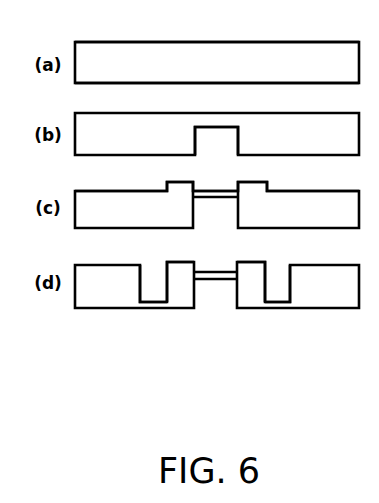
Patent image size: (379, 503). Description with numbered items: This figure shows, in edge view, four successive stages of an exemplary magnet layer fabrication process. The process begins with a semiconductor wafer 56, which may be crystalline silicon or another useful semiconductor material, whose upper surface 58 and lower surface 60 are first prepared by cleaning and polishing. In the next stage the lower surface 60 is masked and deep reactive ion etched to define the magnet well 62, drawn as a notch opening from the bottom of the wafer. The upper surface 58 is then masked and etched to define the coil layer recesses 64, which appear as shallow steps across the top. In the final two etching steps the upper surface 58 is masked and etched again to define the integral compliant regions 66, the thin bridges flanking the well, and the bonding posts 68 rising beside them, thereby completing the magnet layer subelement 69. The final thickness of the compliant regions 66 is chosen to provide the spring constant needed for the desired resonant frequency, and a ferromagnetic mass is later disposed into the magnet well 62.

The semiconductor wafer 56 is at (103, 52).
The upper surface 58 is at (209, 42).
The lower surface 60 is at (215, 82).
The magnet well 62 is at (218, 138).
The coil layer recesses 64 is at (127, 188).
The integral compliant regions 66 is at (155, 305).
The bonding posts 68 is at (177, 260).
The magnet layer subelement 69 is at (68, 334).